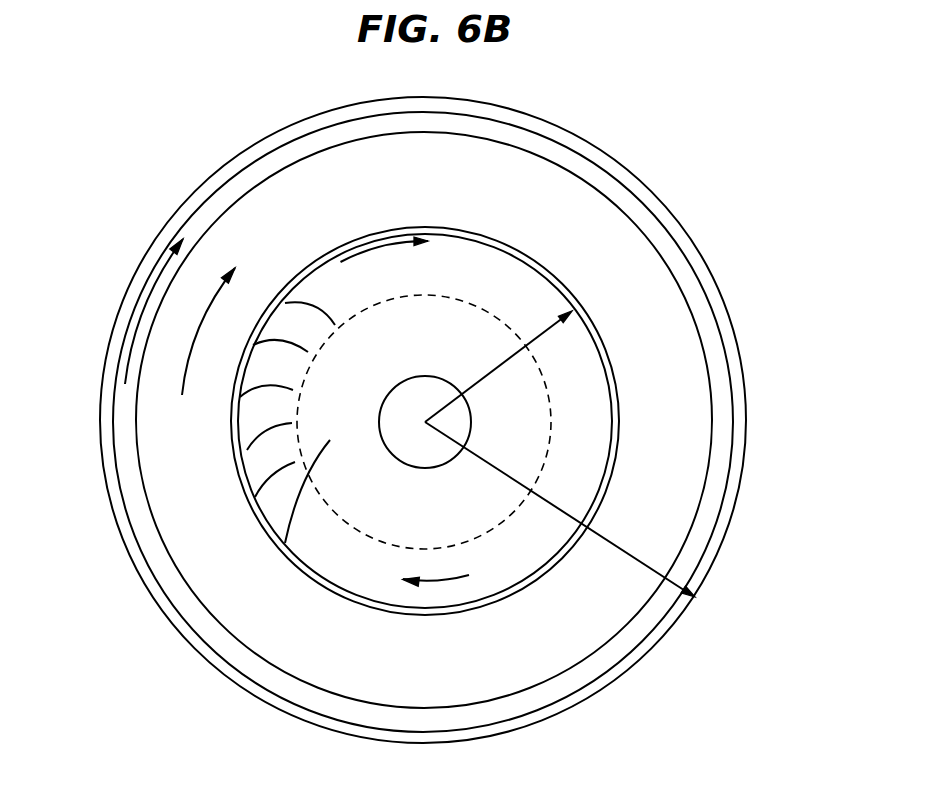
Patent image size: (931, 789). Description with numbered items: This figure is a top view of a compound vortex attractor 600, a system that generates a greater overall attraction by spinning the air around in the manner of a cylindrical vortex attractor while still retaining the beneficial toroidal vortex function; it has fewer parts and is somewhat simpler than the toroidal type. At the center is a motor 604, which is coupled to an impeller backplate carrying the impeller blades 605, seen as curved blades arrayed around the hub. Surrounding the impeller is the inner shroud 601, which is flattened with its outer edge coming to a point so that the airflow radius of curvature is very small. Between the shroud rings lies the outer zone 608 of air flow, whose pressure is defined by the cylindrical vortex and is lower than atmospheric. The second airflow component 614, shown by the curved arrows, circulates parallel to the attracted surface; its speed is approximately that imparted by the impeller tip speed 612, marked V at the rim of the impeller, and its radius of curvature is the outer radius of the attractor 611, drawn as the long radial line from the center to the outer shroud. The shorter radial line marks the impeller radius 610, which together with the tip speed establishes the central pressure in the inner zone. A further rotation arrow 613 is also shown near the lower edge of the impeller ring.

The compound vortex attractor 600 is at (825, 206).
The inner shroud 601 is at (590, 227).
The motor 604 is at (420, 470).
The impeller blades 605 is at (293, 462).
The outer zone 608 is at (142, 535).
The impeller radius 610 is at (482, 373).
The outer radius of the attractor 611 is at (597, 538).
The impeller tip speed 612 is at (375, 242).
The rotation direction arrow 613 is at (435, 580).
The second airflow component 614 is at (197, 330).